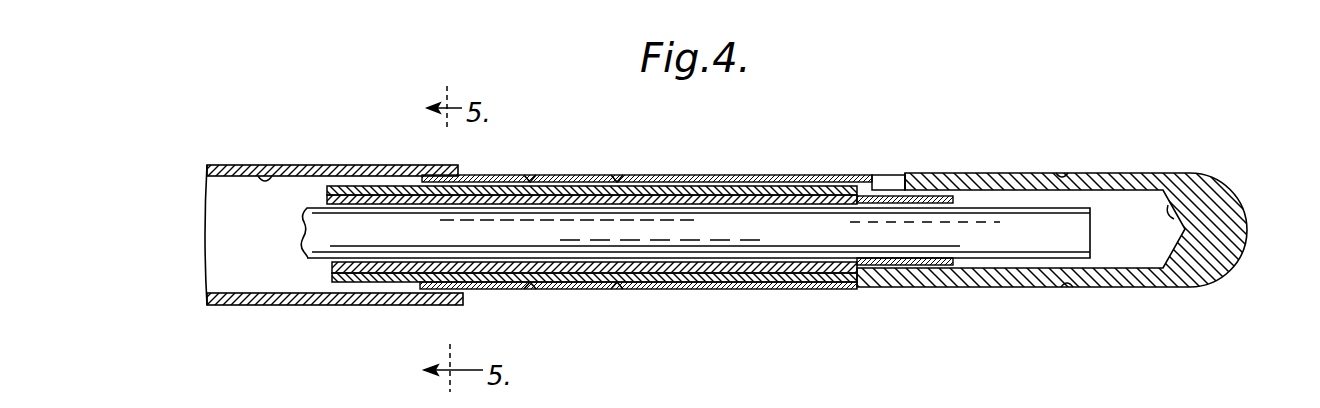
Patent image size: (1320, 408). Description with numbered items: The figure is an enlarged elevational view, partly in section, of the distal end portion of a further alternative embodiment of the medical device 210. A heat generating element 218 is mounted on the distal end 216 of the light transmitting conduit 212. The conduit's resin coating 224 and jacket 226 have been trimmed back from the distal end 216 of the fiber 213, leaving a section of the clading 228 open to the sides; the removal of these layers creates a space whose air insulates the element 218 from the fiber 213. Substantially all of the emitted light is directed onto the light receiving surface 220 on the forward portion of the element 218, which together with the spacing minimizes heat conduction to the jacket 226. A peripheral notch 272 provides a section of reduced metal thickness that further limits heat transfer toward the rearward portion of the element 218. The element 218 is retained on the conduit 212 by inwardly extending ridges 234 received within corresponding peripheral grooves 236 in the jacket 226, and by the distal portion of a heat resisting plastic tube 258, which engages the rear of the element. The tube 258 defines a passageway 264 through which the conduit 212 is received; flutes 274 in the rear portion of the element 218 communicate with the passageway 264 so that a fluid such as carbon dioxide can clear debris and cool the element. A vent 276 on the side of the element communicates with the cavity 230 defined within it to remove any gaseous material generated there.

The medical device 210 is at (849, 158).
The light transmitting conduit 212 is at (1003, 258).
The fiber 213 is at (580, 215).
The distal end 216 is at (1093, 216).
The heat generating element 218 is at (688, 176).
The light receiving surface 220 is at (1175, 218).
The resin coating 224 is at (917, 268).
The jacket 226 is at (765, 182).
The clading 228 is at (1060, 228).
The cavity 230 is at (1128, 268).
The inwardly extending ridges 234 is at (612, 318).
The peripheral grooves 236 is at (528, 262).
The tube 258 is at (418, 166).
The passageway 264 is at (265, 177).
The peripheral notch 272 is at (1064, 178).
The flutes 274 is at (468, 180).
The vent 276 is at (890, 178).